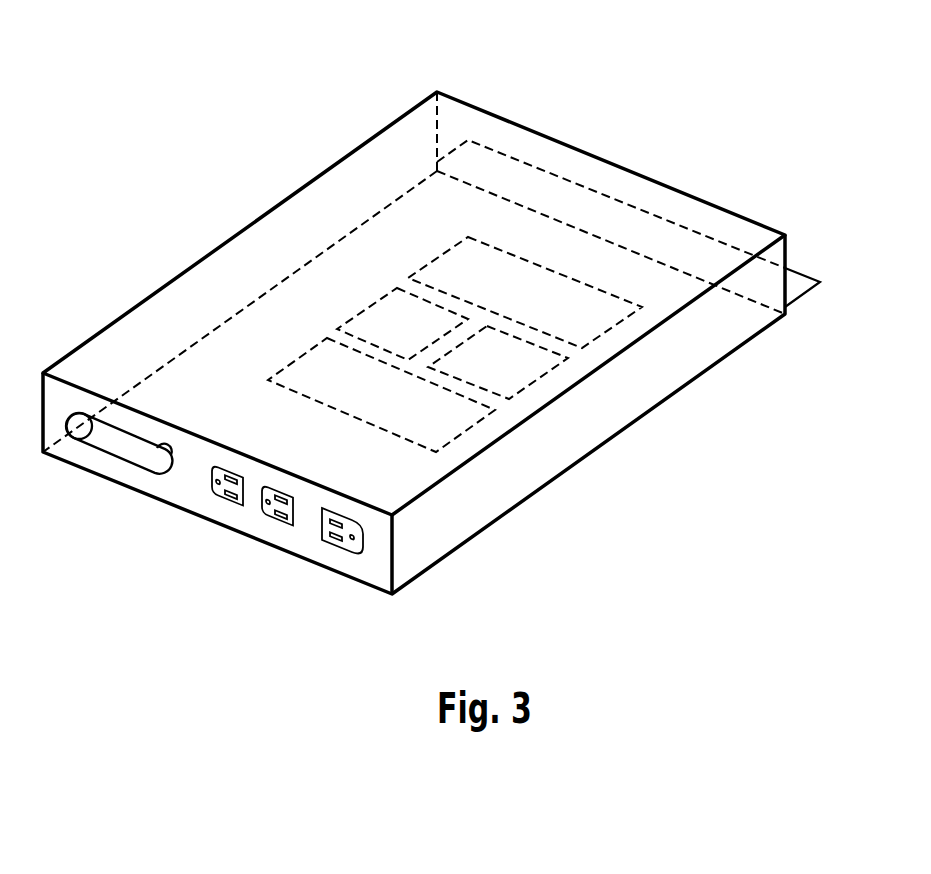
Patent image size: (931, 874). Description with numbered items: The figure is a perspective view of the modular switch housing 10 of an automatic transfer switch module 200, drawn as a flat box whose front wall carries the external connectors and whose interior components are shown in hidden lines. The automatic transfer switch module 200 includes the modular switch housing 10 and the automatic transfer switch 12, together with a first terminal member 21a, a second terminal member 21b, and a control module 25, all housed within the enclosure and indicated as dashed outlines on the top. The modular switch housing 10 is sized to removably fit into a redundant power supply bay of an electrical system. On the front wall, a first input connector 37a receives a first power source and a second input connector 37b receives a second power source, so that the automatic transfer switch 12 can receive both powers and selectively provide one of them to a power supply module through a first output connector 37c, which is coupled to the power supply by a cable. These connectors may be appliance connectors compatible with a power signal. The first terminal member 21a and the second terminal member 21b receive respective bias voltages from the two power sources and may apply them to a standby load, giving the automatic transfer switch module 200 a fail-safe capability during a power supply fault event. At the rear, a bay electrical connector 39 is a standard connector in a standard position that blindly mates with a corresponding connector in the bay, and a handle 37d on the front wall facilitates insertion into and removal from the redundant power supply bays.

The automatic transfer switch module 200 is at (454, 44).
The modular switch housing 10 is at (128, 310).
The automatic transfer switch 12 is at (404, 405).
The first terminal member 21a is at (424, 336).
The second terminal member 21b is at (519, 373).
The control module 25 is at (538, 308).
The first input connector 37a is at (215, 493).
The second input connector 37b is at (263, 513).
The first output connector 37c is at (352, 547).
The handle 37d is at (113, 452).
The bay electrical connector 39 is at (795, 285).